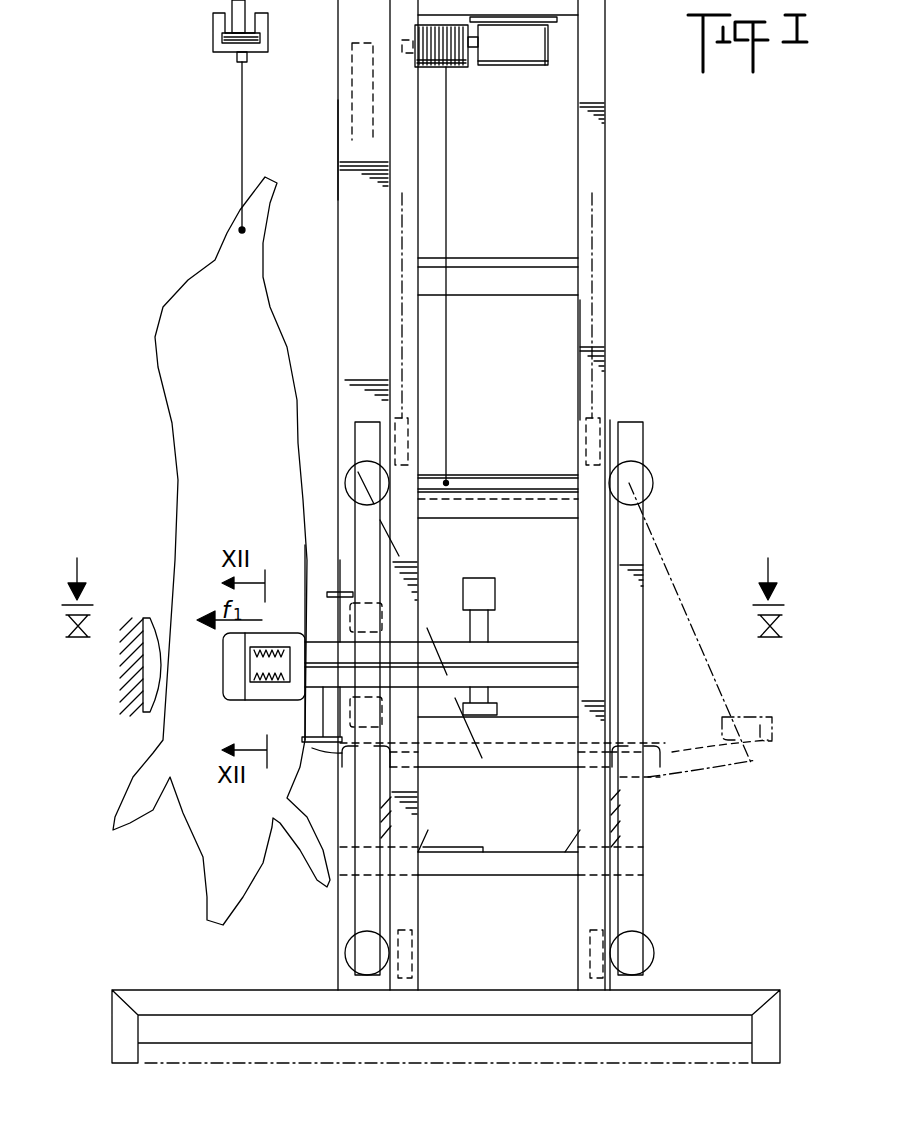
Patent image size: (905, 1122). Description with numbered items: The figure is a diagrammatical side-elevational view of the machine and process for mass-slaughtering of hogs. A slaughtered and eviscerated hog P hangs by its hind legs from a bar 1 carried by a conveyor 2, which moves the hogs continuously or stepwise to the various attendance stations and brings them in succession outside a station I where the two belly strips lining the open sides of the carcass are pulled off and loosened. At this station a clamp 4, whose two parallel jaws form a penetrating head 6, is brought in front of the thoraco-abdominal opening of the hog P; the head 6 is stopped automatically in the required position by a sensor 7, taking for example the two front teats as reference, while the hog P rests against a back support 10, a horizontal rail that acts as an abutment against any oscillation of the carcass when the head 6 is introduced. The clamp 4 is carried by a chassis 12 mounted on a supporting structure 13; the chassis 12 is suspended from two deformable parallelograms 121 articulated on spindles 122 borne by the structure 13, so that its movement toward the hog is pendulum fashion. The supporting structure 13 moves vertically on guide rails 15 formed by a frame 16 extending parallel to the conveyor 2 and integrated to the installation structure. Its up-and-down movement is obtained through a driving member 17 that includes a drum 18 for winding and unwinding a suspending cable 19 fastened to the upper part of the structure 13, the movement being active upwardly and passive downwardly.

The bar 1 is at (235, 125).
The conveyor 2 is at (213, 38).
The clamp 4 is at (507, 636).
The penetrating head 6 is at (220, 704).
The sensor 7 is at (336, 592).
The back support 10 is at (150, 685).
The chassis 12 is at (524, 762).
The deformable parallelograms 121 is at (400, 556).
The spindles 122 is at (686, 470).
The supporting structure 13 is at (646, 573).
The guide rails 15 is at (603, 352).
The frame 16 is at (614, 165).
The driving member 17 is at (538, 66).
The drum 18 is at (456, 67).
The suspending cable 19 is at (447, 237).
The hog P is at (165, 347).
The station I is at (321, 332).